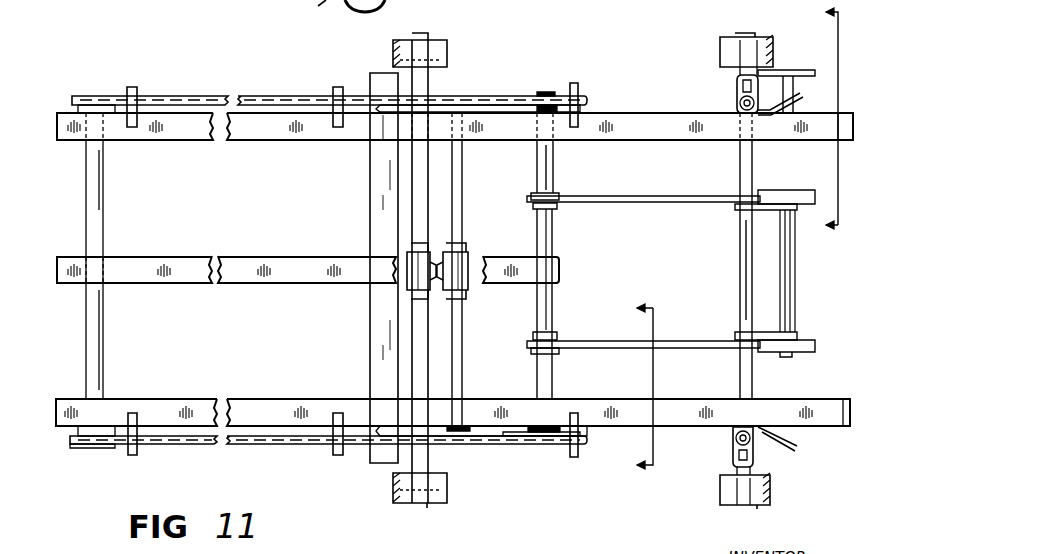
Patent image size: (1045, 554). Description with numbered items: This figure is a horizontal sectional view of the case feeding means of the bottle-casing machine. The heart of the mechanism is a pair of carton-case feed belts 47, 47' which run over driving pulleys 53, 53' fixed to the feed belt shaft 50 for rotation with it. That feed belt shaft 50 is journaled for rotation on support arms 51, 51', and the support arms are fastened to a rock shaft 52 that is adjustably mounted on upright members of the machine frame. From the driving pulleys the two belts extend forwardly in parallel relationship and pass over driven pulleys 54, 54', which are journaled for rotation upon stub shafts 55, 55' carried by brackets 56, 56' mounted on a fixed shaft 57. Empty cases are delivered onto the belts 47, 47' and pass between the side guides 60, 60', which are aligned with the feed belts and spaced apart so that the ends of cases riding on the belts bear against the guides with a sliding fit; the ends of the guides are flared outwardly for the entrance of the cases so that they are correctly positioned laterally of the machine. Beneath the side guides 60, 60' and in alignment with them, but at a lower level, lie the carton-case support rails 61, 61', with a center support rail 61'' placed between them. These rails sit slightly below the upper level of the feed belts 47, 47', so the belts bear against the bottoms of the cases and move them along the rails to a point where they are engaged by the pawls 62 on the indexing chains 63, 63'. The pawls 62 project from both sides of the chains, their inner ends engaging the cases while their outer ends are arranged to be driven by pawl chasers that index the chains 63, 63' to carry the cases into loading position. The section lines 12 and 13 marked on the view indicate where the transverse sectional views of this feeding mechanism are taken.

The section line 12- 12 is at (652, 389).
The section line 13- 13 is at (846, 120).
The carton-case feed belt 47 is at (643, 324).
The carton-case feed belt 47' is at (643, 221).
The feed belt shaft 50 is at (790, 290).
The support arm 51 is at (766, 320).
The support arm 51' is at (766, 224).
The rock shaft 52 is at (740, 262).
The driving pulley 53 is at (798, 329).
The driving pulley 53' is at (795, 179).
The driven pulley 54 is at (562, 370).
The driven pulley 54' is at (566, 176).
The stub shaft 55 is at (522, 304).
The stub shaft 55' is at (521, 153).
The bracket 56 is at (522, 338).
The bracket 56' is at (521, 221).
The fixed shaft 57 is at (548, 255).
The side guide 60 is at (790, 458).
The side guide 60' is at (797, 92).
The carton-case support rail 61 is at (453, 397).
The carton-case support rail 61' is at (455, 143).
The center support rail 61'' is at (308, 251).
The pawl 62 is at (134, 127).
The indexing chain 63 is at (328, 456).
The indexing chain 63' is at (329, 89).